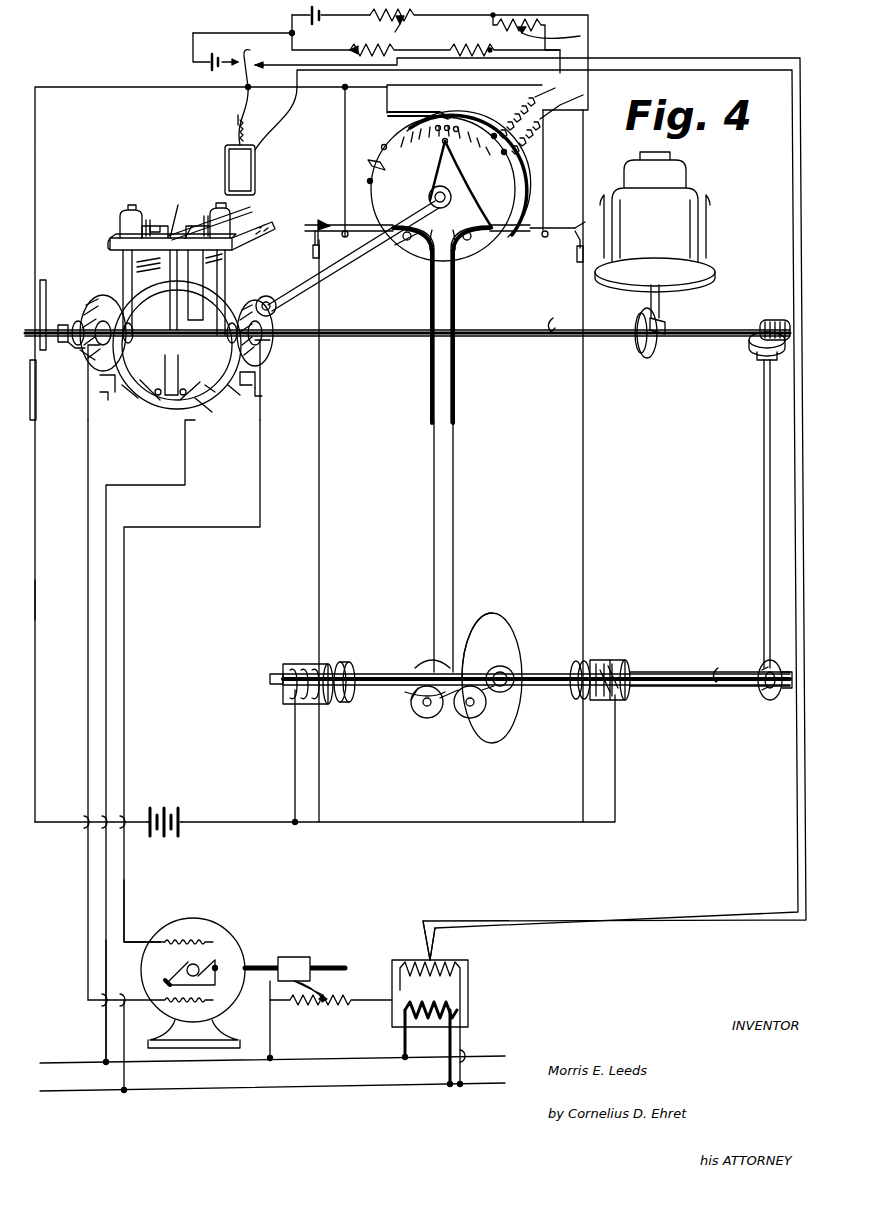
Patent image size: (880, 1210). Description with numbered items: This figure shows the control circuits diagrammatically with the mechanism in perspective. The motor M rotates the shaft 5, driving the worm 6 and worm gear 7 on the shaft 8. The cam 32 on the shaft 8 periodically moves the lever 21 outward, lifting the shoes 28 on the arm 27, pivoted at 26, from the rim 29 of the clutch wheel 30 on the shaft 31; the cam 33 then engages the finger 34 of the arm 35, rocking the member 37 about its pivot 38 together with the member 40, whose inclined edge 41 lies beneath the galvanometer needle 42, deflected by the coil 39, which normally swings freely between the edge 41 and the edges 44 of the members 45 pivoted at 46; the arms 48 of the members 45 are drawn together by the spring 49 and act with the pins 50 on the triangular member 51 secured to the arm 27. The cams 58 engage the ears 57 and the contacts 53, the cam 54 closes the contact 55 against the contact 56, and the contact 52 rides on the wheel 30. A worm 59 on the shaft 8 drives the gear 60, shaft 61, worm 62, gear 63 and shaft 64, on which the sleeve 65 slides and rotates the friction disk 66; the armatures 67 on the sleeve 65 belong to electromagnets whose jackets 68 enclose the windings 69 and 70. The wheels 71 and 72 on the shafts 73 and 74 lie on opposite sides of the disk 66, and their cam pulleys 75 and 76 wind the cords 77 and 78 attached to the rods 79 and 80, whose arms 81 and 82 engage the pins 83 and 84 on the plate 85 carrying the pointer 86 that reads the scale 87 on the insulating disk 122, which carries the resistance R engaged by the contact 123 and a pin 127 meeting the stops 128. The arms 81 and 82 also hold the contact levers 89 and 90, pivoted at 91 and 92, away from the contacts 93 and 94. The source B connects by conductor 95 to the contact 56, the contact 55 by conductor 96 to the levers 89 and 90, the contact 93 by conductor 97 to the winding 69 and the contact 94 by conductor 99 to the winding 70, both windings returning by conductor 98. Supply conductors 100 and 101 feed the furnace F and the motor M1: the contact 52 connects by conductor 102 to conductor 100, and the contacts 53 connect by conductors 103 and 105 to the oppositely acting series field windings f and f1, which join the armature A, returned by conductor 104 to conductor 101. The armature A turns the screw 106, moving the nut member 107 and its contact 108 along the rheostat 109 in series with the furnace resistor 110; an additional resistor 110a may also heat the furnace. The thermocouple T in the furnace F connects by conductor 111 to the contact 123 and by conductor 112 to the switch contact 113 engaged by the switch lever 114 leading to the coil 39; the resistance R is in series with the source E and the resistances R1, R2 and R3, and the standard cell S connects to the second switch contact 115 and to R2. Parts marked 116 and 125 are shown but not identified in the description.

The motor shaft 5 is at (662, 302).
The worm 6 is at (665, 323).
The worm gear 7 is at (652, 355).
The main shaft 8 is at (30, 334).
The drum wheel 21 is at (135, 290).
The wheel flange 26 is at (150, 405).
The bracket arm 27 is at (135, 396).
The bracket 28 is at (112, 388).
The pivot arm 29 is at (208, 412).
The hanger 30 is at (176, 395).
The connecting rod 31 is at (340, 250).
The left pulley 32 is at (118, 305).
The right pulley 33 is at (245, 302).
The lever 34 is at (220, 390).
The post 35 is at (203, 270).
The top plate 37 is at (108, 245).
The arm 38 is at (268, 226).
The relay coil 39 is at (257, 160).
The contact arm 40 is at (176, 205).
The contact 41 is at (192, 224).
The armature 42 is at (180, 232).
The contact post 44 is at (148, 220).
The contact block 45 is at (120, 224).
The terminal block 46 is at (130, 212).
The collar 48 is at (78, 322).
The guide 49 is at (160, 270).
The pin 50 is at (180, 396).
The pin 51 is at (160, 398).
The lead wire 52 is at (188, 440).
The support bracket 53 is at (270, 346).
The bearing 54 is at (62, 325).
The bearing arm 55 is at (75, 348).
The stop plate 56 is at (36, 385).
The bracket foot 57 is at (105, 400).
The crank pulley 58 is at (278, 314).
The worm 59 is at (775, 320).
The worm gear 60 is at (752, 350).
The vertical shaft 61 is at (763, 448).
The bevel gear 62 is at (762, 694).
The bearing 63 is at (790, 692).
The cam shaft 64 is at (672, 670).
The cam shaft 65 is at (392, 672).
The disk 66 is at (508, 625).
The collar 67 is at (348, 662).
The spring 68 is at (316, 704).
The clutch sleeve 69 is at (612, 660).
The shaft end 70 is at (283, 692).
The hub 71 is at (512, 688).
The clutch 72 is at (410, 685).
The pawl 73 is at (498, 690).
The link 74 is at (449, 698).
The cam 75 is at (470, 718).
The cam 76 is at (420, 714).
The rod 77 is at (453, 523).
The rod 78 is at (434, 523).
The yoke arm 79 is at (458, 372).
The yoke arm 80 is at (430, 382).
The contact bar 81 is at (492, 236).
The contact bar 82 is at (366, 222).
The contact 83 is at (467, 241).
The contact 84 is at (407, 241).
The pointer 85 is at (475, 200).
The pointer tip 86 is at (444, 145).
The scale 87 is at (410, 136).
The contact stop 89 is at (565, 226).
The contact 90 is at (336, 240).
The contact 91 is at (545, 238).
The contact tip 92 is at (322, 220).
The terminal 93 is at (585, 254).
The terminal 94 is at (311, 252).
The wire 95 is at (37, 600).
The wire 96 is at (93, 93).
The wire 97 is at (585, 416).
The wire 98 is at (297, 765).
The wire 99 is at (321, 473).
The supply line 100 is at (78, 1062).
The supply line 101 is at (172, 1090).
The wire 102 is at (108, 958).
The wire 103 is at (126, 900).
The wire 104 is at (126, 1022).
The wire 105 is at (86, 930).
The shaft 106 is at (340, 962).
The contact slider 107 is at (300, 957).
The wiper arm 108 is at (318, 984).
The resistor 109 is at (340, 1005).
The heater coil 110 is at (460, 993).
The heater coil 110a is at (452, 1012).
The wire 111 is at (385, 95).
The wire 112 is at (781, 56).
The switch contact 113 is at (262, 63).
The switch blade 114 is at (250, 52).
The switch pivot 115 is at (244, 82).
The galvanometer coil 116 is at (505, 122).
The lead 122 is at (545, 150).
The pointer stop 123 is at (452, 114).
The lead 125 is at (580, 36).
The contact 127 is at (366, 162).
The contact 128 is at (382, 147).
The switch S is at (215, 58).
The battery E is at (313, 27).
The resistor R1 is at (392, 18).
The resistor R2 is at (398, 48).
The resistor R3 is at (492, 20).
The galvanometer scale arc R is at (475, 120).
The motor M is at (655, 222).
The battery B is at (164, 806).
The motor M1 is at (232, 932).
The field coil f is at (190, 942).
The field coil f1 is at (210, 1002).
The armature A is at (218, 965).
The thermostat T is at (435, 965).
The furnace F is at (468, 965).